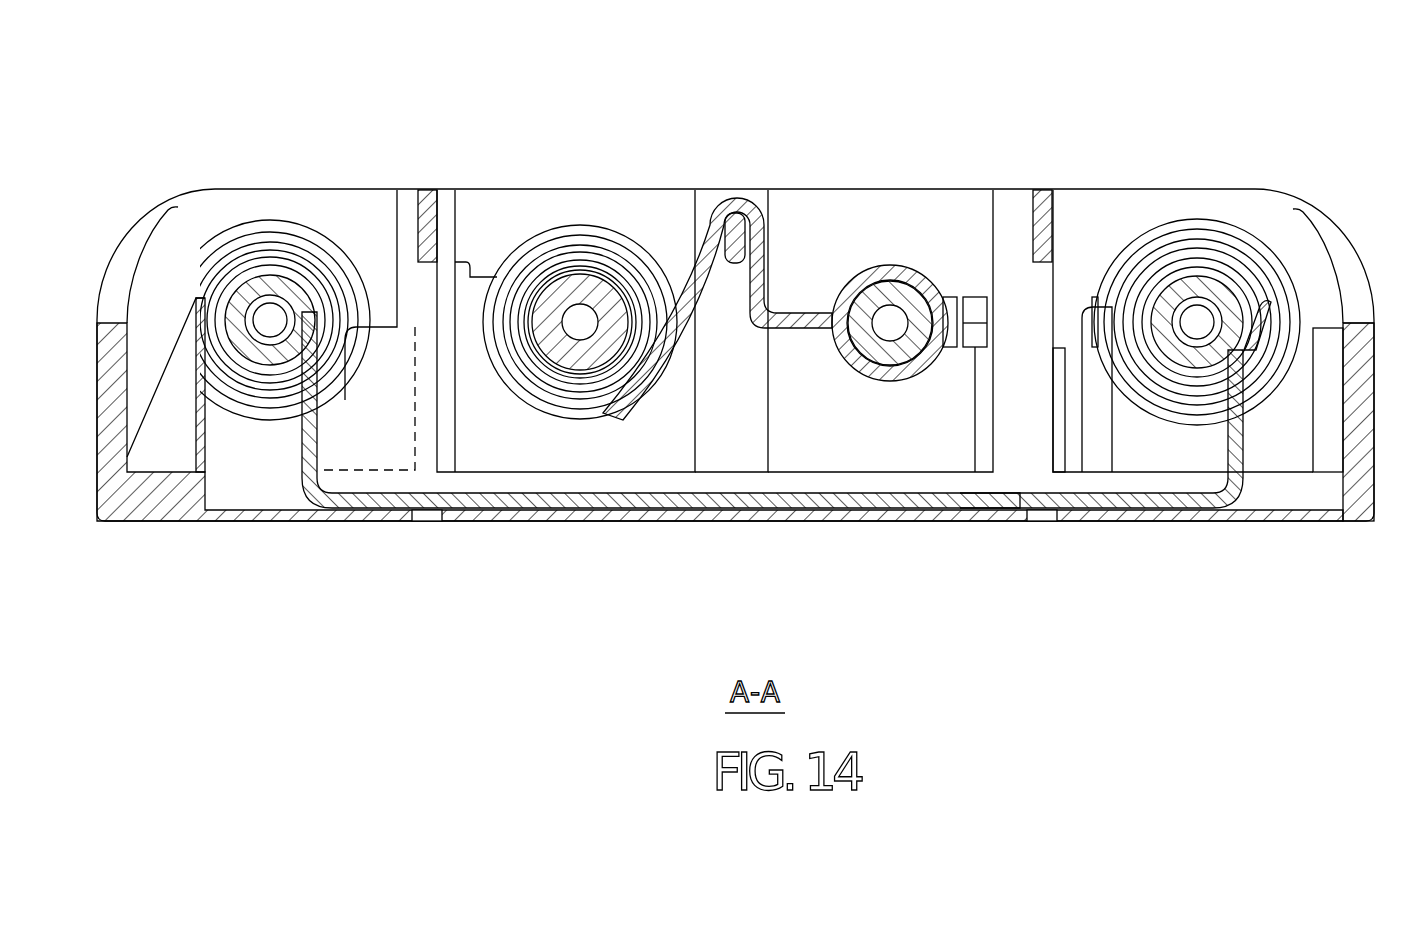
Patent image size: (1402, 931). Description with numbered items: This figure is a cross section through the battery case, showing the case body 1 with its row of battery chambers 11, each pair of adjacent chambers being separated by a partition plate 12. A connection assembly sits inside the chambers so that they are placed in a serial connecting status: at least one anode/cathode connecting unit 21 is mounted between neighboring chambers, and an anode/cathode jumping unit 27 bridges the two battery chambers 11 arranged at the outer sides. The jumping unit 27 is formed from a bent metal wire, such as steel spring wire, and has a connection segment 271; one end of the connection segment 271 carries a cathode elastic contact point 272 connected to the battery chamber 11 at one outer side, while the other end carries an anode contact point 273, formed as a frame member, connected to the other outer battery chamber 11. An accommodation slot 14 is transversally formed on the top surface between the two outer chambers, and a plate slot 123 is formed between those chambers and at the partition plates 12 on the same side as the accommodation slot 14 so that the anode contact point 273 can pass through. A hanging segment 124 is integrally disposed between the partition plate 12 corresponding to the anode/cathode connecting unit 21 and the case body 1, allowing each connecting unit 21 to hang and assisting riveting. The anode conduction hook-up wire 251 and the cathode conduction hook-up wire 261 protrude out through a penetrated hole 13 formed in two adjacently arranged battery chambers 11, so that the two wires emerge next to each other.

The case body 1 is at (1303, 207).
The battery chamber 11 is at (363, 238).
The partition plate 12 is at (425, 190).
The plate slot 123 is at (421, 388).
The hanging segment 124 is at (760, 190).
The penetrated hole 13 is at (1073, 463).
The accommodation slot 14 is at (1313, 497).
The anode/cathode connecting unit 21 is at (541, 413).
The anode conduction hook-up wire 251 is at (1103, 417).
The cathode conduction hook-up wire 261 is at (982, 392).
The anode/cathode jumping unit 27 is at (1253, 497).
The connection segment 271 is at (988, 505).
The cathode elastic contact point 272 is at (1265, 300).
The anode contact point 273 is at (282, 352).